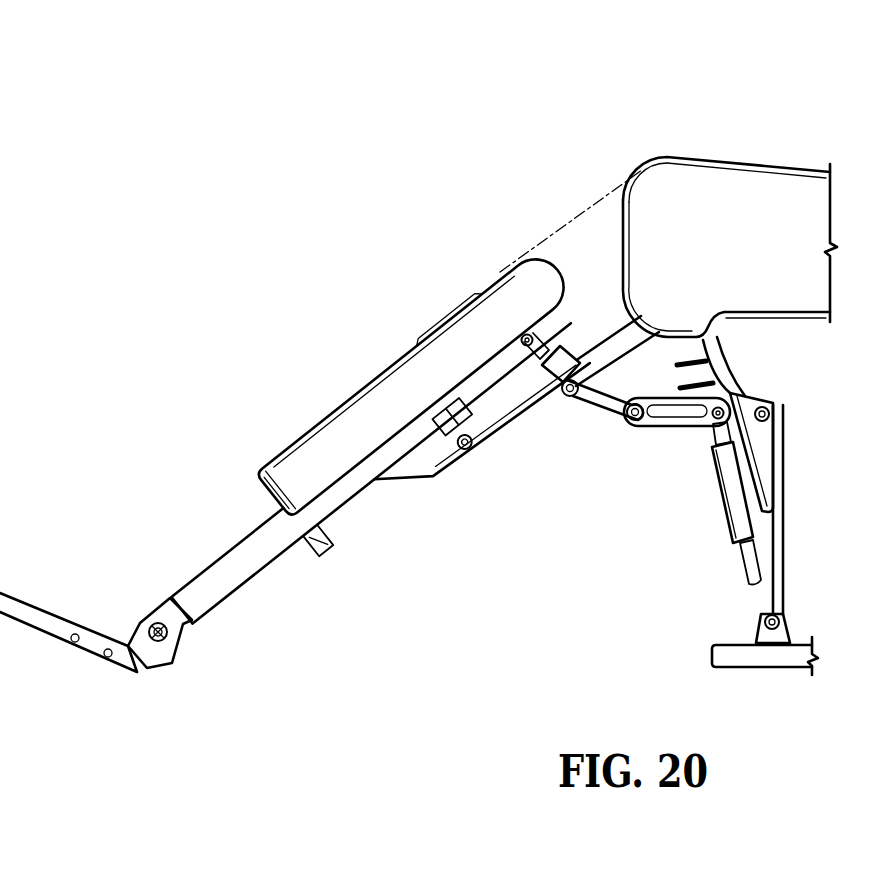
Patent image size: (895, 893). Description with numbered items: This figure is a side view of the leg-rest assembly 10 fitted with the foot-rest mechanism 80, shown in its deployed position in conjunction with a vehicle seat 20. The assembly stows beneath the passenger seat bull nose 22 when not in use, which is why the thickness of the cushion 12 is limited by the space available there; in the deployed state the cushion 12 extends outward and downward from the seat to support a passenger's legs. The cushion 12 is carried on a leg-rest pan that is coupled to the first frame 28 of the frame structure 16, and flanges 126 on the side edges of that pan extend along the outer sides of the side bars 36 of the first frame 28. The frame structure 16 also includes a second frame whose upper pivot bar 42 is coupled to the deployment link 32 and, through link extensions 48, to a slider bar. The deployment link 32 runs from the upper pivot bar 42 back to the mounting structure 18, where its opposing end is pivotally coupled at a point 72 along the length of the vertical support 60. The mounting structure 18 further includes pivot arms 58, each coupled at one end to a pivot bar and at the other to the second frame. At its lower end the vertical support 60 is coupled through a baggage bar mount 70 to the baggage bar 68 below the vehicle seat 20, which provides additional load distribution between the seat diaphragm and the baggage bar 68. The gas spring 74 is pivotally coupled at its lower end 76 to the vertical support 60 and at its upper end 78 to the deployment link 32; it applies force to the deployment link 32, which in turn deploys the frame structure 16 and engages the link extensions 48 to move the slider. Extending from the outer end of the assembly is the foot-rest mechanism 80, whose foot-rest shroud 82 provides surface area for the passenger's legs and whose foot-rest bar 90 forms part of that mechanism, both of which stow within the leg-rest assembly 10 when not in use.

The leg-rest assembly 10 is at (438, 413).
The cushion 12 is at (388, 348).
The frame structure 16 is at (399, 496).
The mounting structure 18 is at (756, 356).
The vehicle seat 20 is at (734, 205).
The passenger seat bull nose 22 is at (571, 172).
The first frame 28 is at (436, 489).
The deployment link 32 is at (605, 417).
The side bars 36 is at (503, 448).
The upper pivot bar 42 is at (577, 345).
The link extensions 48 is at (562, 304).
The pivot arms 58 is at (596, 414).
The vertical support 60 is at (747, 367).
The baggage bar 68 is at (765, 695).
The baggage bar mount 70 is at (816, 605).
The point 72 is at (796, 488).
The gas spring 74 is at (701, 482).
The lower end 76 is at (709, 569).
The upper end 78 is at (677, 434).
The foot-rest mechanism 80 is at (142, 562).
The foot-rest shroud 82 is at (206, 613).
The foot-rest bar 90 is at (68, 599).
The flanges 126 is at (497, 460).